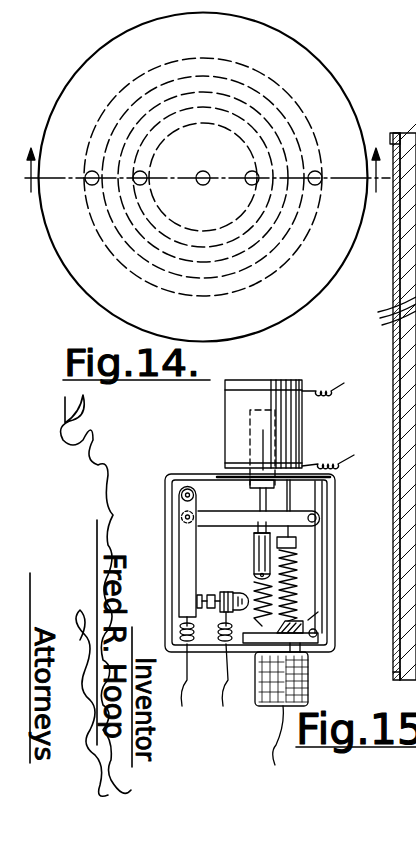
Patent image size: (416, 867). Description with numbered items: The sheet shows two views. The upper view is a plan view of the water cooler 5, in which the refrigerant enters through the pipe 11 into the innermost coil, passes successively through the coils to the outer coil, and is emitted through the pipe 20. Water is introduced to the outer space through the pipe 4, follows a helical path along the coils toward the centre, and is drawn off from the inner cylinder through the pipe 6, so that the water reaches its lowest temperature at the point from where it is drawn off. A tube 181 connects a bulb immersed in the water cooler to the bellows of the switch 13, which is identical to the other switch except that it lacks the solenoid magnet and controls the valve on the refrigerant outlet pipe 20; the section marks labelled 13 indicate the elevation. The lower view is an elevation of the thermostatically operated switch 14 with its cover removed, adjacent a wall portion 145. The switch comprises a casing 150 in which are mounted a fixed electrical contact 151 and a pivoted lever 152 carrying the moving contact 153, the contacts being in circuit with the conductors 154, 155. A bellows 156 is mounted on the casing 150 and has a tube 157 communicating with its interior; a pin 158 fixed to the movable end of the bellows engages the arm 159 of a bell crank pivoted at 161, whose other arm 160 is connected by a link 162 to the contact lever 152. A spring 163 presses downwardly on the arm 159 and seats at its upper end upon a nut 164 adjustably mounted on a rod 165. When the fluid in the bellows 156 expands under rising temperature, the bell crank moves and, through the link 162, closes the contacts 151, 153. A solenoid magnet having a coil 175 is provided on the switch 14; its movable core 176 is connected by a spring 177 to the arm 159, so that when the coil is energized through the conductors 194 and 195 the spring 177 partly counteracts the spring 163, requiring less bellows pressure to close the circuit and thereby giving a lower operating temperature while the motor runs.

In FIG. 14, the water cooler 5 is at (203, 177).
In FIG. 14, the pipe 4 is at (85, 172).
In FIG. 14, the pipe 11 is at (146, 173).
In FIG. 14, the pipe 6 is at (207, 184).
In FIG. 14, the tube 181 is at (247, 173).
In FIG. 14, the pipe 20 is at (320, 183).
In FIG. 14, the switch 13 is at (206, 187).
In FIG. 15, the switch 14 is at (165, 492).
In FIG. 15, the wall member 145 is at (398, 301).
In FIG. 15, the solenoid magnet coil 175 is at (272, 381).
In FIG. 15, the movable core 176 is at (250, 430).
In FIG. 15, the conductor 195 is at (331, 383).
In FIG. 15, the conductor 194 is at (334, 460).
In FIG. 15, the link 162 is at (214, 475).
In FIG. 15, the rod 165 is at (292, 492).
In FIG. 15, the casing 150 is at (230, 517).
In FIG. 15, the nut 164 is at (322, 519).
In FIG. 15, the pivoted lever 152 is at (192, 540).
In FIG. 15, the bell crank arm 160 is at (316, 553).
In FIG. 15, the spring 177 is at (260, 600).
In FIG. 15, the spring 163 is at (300, 582).
In FIG. 15, the pivot 161 is at (318, 633).
In FIG. 15, the pin 158 is at (313, 650).
In FIG. 15, the bell crank arm 159 is at (318, 615).
In FIG. 15, the fixed electrical contact 151 is at (197, 601).
In FIG. 15, the moving contact 153 is at (200, 593).
In FIG. 15, the conductor 155 is at (193, 680).
In FIG. 15, the conductor 154 is at (239, 677).
In FIG. 15, the bellows 156 is at (310, 690).
In FIG. 15, the tube 157 is at (296, 740).